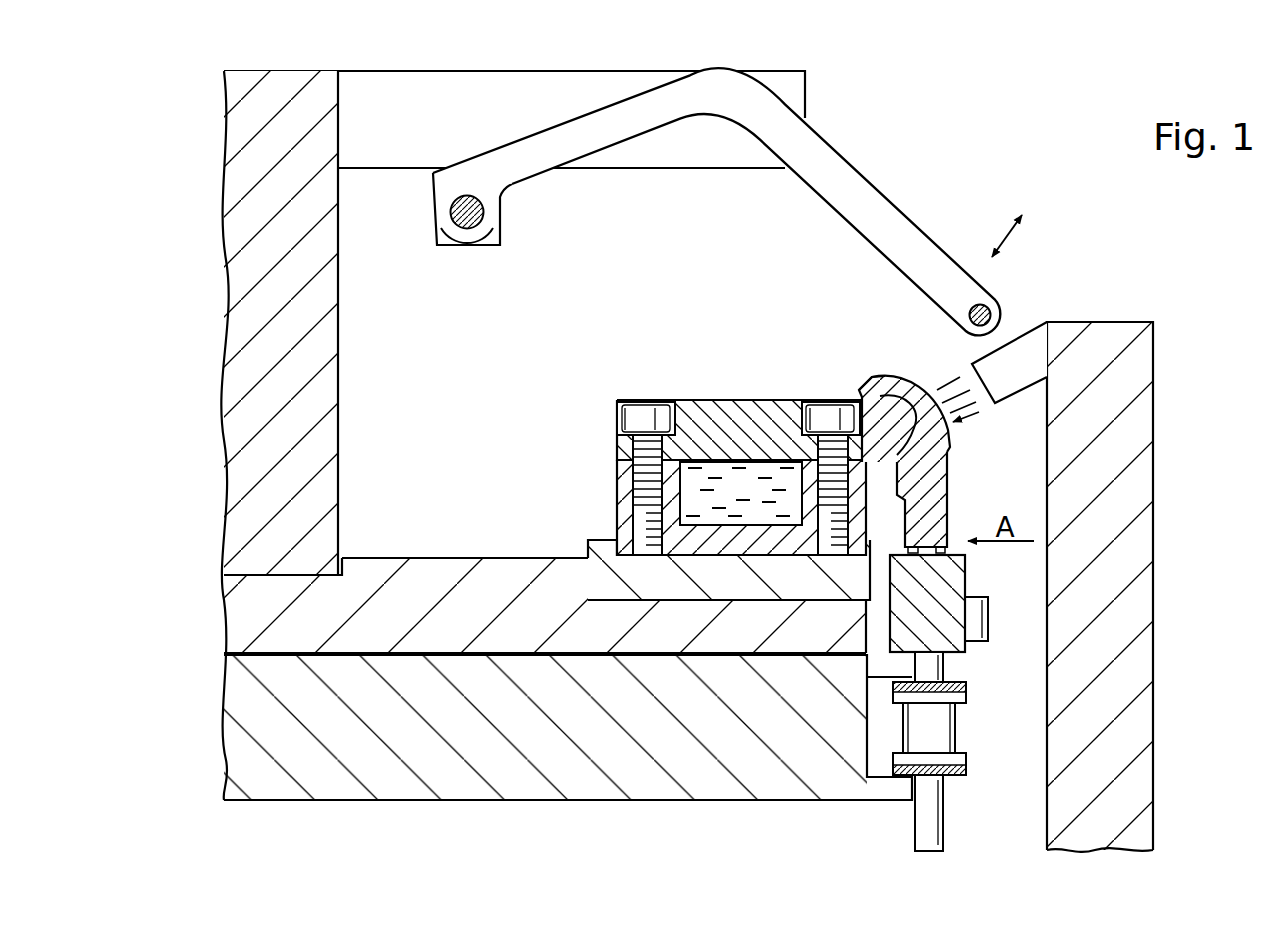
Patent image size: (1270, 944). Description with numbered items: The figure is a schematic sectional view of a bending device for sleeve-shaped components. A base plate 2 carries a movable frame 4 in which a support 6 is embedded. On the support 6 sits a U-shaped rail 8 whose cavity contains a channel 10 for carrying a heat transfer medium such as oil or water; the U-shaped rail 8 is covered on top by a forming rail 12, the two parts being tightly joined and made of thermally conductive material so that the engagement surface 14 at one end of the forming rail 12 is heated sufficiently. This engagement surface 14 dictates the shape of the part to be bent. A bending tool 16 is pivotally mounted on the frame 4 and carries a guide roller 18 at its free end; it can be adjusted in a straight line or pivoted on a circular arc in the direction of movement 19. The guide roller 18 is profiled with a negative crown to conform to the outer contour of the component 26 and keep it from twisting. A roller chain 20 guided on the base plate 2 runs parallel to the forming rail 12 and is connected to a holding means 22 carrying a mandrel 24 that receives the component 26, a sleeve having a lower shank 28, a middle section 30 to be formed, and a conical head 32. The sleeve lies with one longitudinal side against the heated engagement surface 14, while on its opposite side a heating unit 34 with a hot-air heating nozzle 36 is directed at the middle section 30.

The base plate 2 is at (514, 742).
The movable frame 4 is at (310, 456).
The support 6 is at (605, 573).
The U-shaped rail 8 is at (620, 520).
The channel 10 is at (695, 495).
The forming rail 12 is at (708, 428).
The engagement surface 14 is at (901, 415).
The bending tool 16 is at (873, 194).
The guide roller 18 is at (990, 298).
The direction of movement 19 is at (1006, 245).
The roller chain 20 is at (945, 727).
The holding means 22 is at (940, 580).
The mandrel 24 is at (907, 551).
The component to be bent 26 is at (928, 388).
The lower shank 28 is at (937, 478).
The middle section 30 is at (914, 384).
The conical head 32 is at (886, 376).
The heating unit 34 is at (1140, 662).
The heating nozzle 36 is at (992, 406).